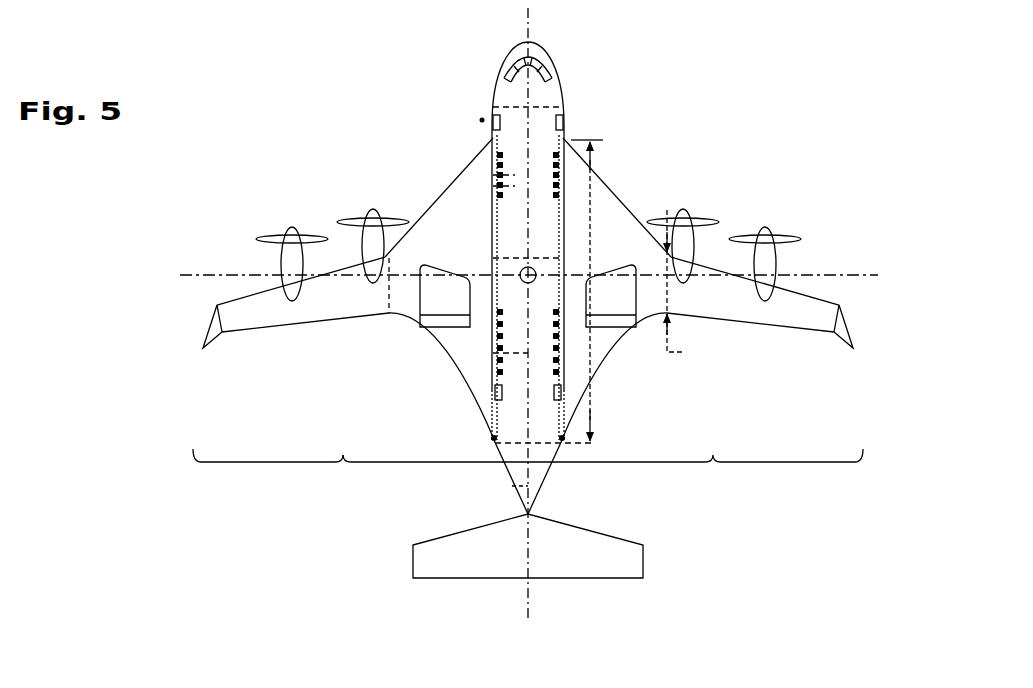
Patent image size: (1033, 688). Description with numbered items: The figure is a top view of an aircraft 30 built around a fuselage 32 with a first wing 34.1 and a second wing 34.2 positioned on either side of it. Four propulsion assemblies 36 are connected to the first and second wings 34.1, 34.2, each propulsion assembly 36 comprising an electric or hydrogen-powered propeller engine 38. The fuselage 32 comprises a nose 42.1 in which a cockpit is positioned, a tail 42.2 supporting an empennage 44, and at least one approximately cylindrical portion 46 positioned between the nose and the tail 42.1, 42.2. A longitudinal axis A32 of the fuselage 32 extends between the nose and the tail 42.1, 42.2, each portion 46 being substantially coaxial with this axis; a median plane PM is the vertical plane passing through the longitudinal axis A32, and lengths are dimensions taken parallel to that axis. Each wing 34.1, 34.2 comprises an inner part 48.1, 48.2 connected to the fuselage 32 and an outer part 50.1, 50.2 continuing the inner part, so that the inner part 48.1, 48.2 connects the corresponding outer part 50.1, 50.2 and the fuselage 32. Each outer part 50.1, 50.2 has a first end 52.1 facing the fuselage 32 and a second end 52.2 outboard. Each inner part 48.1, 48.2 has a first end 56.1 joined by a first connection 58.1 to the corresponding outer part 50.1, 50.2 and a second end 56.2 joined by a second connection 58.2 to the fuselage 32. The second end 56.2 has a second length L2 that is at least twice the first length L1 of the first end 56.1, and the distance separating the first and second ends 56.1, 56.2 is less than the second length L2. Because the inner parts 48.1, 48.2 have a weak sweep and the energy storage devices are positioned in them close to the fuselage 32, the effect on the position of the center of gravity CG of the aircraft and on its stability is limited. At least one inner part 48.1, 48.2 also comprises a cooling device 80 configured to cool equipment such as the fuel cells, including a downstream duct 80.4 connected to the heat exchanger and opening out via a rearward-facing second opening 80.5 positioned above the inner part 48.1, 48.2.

The aircraft 30 is at (290, 483).
The fuselage 32 is at (488, 437).
The first wing 34.1 is at (603, 473).
The second wing 34.2 is at (284, 473).
The propulsion assembly 36 is at (363, 248).
The propeller engine 38 is at (373, 213).
The nose 42.1 is at (540, 90).
The tail 42.2 is at (545, 473).
The empennage 44 is at (492, 555).
The approximately cylindrical portion 46 is at (493, 207).
The inner part of first wing 48.1 is at (606, 191).
The inner part of second wing 48.2 is at (440, 197).
The outer part of first wing 50.1 is at (805, 328).
The outer part of second wing 50.2 is at (258, 328).
The first end of outer part 52.1 is at (352, 316).
The second end of outer part 52.2 is at (216, 337).
The first end of inner part 56.1 is at (405, 243).
The second end of inner part 56.2 is at (490, 185).
The first connection 58.1 is at (387, 320).
The second connection 58.2 is at (482, 117).
The cooling device 80 is at (421, 320).
The downstream duct 80.4 is at (430, 325).
The second opening 80.5 is at (462, 332).
The center of gravity CG is at (528, 267).
The first length L1 is at (690, 285).
The second length L2 is at (596, 290).
The median plane PM is at (528, 486).
The longitudinal axis A32 is at (530, 547).